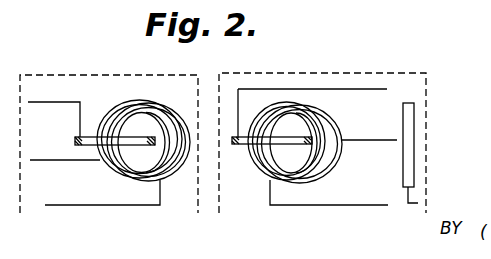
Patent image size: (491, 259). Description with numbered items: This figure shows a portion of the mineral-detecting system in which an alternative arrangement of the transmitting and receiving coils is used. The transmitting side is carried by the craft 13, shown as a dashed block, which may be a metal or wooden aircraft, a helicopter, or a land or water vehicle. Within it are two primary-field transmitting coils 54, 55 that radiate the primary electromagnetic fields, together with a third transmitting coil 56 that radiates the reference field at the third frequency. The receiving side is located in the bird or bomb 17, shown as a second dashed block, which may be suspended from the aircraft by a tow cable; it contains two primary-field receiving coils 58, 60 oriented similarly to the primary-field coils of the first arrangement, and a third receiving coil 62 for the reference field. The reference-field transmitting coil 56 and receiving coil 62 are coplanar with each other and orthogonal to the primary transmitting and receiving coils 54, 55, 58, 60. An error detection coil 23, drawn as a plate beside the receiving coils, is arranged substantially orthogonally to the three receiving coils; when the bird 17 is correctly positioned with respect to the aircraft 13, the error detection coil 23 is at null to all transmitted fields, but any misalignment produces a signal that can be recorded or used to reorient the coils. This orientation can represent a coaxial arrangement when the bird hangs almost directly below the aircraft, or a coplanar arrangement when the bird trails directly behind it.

The craft 13 is at (113, 66).
The bird or bomb 17 is at (346, 71).
The primary-field transmitting coil 54 is at (165, 178).
The primary-field transmitting coil 55 is at (113, 170).
The third transmitting coil 56 is at (78, 138).
The primary-field receiving coil 58 is at (315, 162).
The primary-field receiving coil 60 is at (323, 116).
The third receiving coil 62 is at (236, 146).
The error detection coil 23 is at (408, 138).